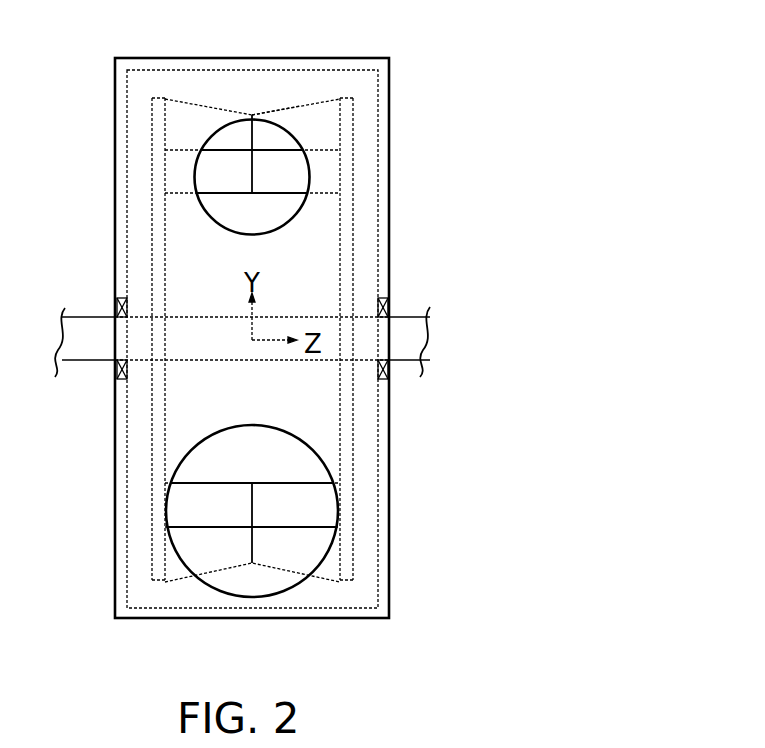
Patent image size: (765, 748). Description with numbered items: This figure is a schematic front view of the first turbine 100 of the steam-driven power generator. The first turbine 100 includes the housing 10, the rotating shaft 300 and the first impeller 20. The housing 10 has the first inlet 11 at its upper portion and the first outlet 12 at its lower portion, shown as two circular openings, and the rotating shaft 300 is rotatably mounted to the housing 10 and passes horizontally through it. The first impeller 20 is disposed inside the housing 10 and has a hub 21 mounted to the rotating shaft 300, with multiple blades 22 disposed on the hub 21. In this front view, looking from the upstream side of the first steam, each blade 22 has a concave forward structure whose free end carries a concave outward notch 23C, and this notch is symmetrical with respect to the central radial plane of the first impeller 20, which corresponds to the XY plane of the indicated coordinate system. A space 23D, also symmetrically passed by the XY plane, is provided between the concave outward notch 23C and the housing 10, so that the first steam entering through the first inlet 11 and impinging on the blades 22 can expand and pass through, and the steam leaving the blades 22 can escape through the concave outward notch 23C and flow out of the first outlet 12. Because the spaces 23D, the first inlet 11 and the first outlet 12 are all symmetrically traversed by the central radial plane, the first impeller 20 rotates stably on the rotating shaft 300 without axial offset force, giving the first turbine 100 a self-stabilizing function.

The housing 10 is at (306, 309).
The first turbine 100 is at (208, 27).
The first impeller 20 is at (358, 233).
The first inlet 11 is at (212, 220).
The first outlet 12 is at (277, 427).
The hub 21 is at (283, 195).
The blade 22 is at (283, 100).
The concave outward notch 23C is at (247, 113).
The space 23D is at (257, 112).
The rotating shaft 300 is at (88, 318).